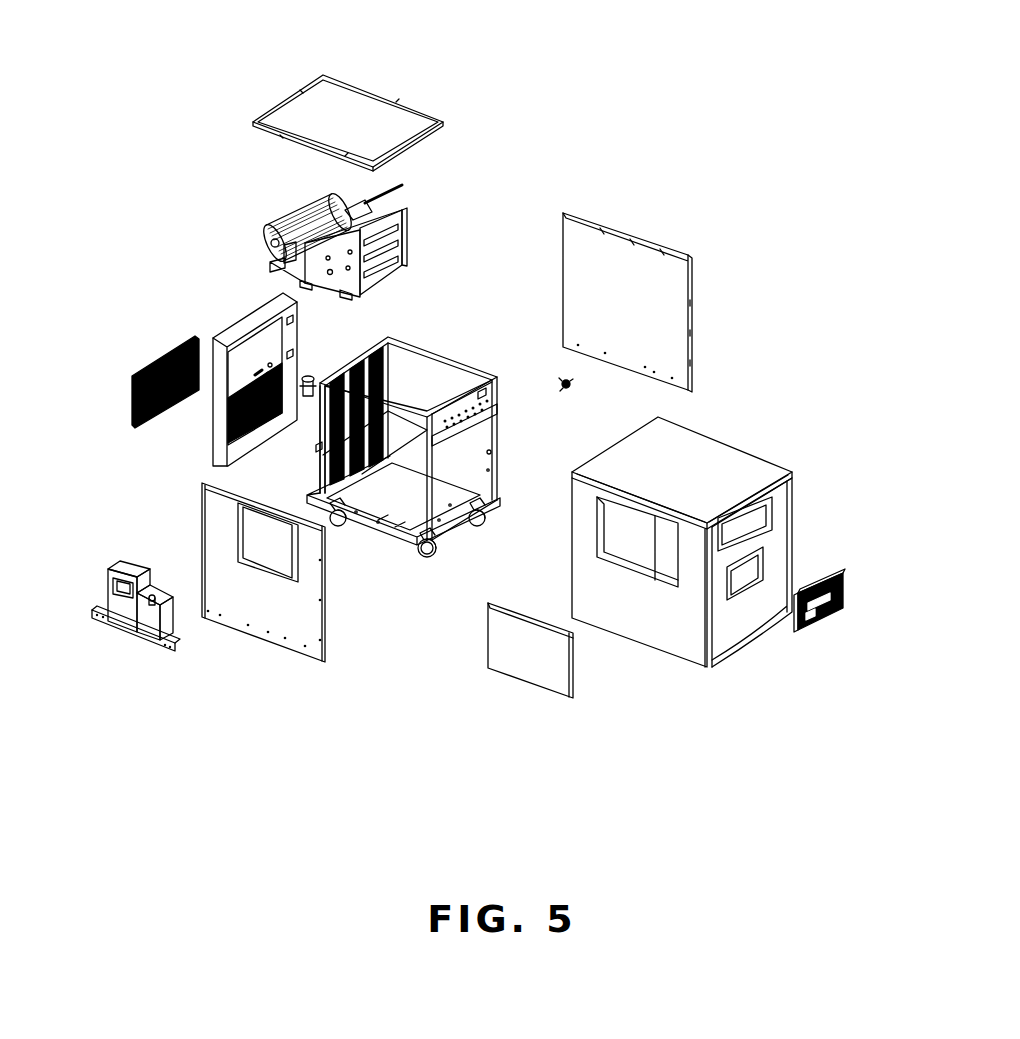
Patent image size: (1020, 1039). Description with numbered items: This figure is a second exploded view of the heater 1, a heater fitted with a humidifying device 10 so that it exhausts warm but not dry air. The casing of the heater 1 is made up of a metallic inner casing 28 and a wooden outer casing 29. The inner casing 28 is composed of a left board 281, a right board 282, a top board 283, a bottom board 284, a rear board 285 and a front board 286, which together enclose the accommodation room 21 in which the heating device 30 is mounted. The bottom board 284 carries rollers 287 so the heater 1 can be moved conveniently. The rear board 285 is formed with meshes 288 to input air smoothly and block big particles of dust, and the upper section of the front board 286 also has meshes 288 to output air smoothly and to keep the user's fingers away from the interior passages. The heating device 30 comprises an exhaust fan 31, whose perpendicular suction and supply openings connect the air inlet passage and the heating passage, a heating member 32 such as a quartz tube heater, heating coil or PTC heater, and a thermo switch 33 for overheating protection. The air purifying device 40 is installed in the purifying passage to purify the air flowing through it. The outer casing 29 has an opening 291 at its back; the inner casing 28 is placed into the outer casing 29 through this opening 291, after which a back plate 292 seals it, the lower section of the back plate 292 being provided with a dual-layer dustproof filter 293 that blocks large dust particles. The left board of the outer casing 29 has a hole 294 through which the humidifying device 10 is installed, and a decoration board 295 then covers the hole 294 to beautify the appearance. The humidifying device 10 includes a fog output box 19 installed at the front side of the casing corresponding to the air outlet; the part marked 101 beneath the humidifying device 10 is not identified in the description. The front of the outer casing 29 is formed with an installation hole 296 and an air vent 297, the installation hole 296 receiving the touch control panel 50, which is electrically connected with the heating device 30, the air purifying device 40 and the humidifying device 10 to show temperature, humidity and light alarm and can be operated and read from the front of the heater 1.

The heater 1 is at (220, 75).
The humidifying device 10 is at (268, 535).
The mounting plate 101 is at (127, 623).
The fog output box 19 is at (497, 408).
The accommodation room 21 is at (400, 365).
The inner casing 28 is at (455, 328).
The left board 281 is at (262, 622).
The right board 282 is at (678, 272).
The top board 283 is at (368, 107).
The bottom board 284 is at (392, 515).
The rear board 285 is at (318, 468).
The front board 286 is at (458, 520).
The rollers 287 is at (425, 562).
The meshes 288 is at (480, 390).
The outer casing 29 is at (762, 460).
The opening 291 is at (465, 462).
The back plate 292 is at (235, 318).
The dual-layer dustproof filter 293 is at (228, 430).
The hole 294 is at (515, 608).
The decoration board 295 is at (575, 675).
The installation hole 296 is at (758, 563).
The air vent 297 is at (762, 505).
The heating device 30 is at (265, 208).
The exhaust fan 31 is at (300, 207).
The heating member 32 is at (397, 243).
The thermo switch 33 is at (395, 190).
The air purifying device 40 is at (577, 380).
The touch control panel 50 is at (856, 581).